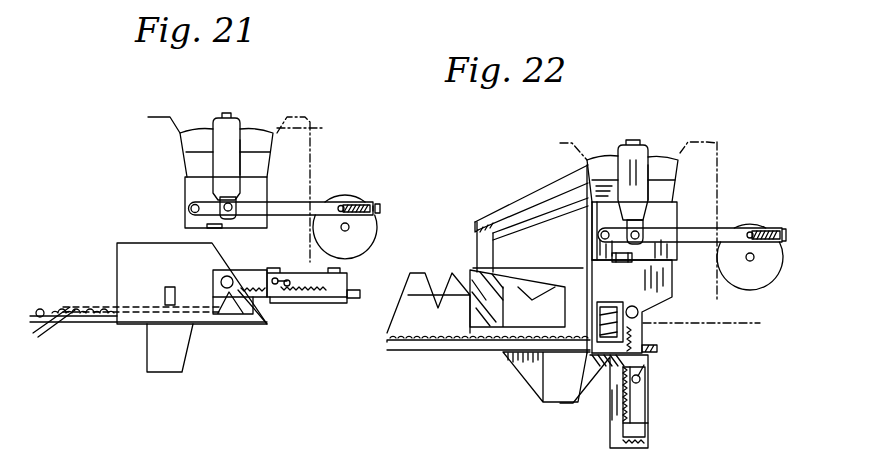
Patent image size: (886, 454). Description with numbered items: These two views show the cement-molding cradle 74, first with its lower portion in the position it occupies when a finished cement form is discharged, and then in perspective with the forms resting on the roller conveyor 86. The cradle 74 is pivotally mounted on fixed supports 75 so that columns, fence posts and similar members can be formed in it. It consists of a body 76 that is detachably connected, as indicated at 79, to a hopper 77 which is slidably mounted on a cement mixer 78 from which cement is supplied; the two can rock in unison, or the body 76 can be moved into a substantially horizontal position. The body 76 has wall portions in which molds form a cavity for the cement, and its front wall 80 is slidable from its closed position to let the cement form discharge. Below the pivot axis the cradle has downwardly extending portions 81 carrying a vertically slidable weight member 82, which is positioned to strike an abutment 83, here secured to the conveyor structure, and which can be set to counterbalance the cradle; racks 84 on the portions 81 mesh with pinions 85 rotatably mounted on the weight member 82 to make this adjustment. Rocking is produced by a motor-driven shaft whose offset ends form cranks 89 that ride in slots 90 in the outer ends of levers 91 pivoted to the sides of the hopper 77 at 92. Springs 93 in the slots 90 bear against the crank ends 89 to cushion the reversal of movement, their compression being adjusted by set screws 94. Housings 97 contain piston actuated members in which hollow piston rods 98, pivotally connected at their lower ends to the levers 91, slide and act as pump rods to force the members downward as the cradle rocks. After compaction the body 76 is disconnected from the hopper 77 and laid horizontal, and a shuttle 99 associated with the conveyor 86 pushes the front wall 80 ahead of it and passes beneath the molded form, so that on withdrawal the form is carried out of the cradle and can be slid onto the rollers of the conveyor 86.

In FIG. 21, the cradle 74 is at (248, 127).
In FIG. 22, the cradle 74 is at (658, 160).
In FIG. 21, the fixed supports 75 is at (229, 297).
In FIG. 22, the fixed supports 75 is at (620, 307).
In FIG. 21, the body 76 is at (128, 256).
In FIG. 22, the body 76 is at (672, 300).
In FIG. 21, the hopper 77 is at (190, 160).
In FIG. 22, the hopper 77 is at (603, 163).
In FIG. 21, the cement mixer 78 is at (249, 189).
In FIG. 22, the cement mixer 78 is at (717, 143).
In FIG. 22, the detachable connection 79 is at (632, 258).
In FIG. 21, the front wall 80 is at (263, 323).
In FIG. 22, the front wall 80 is at (538, 238).
In FIG. 21, the downwardly extending portions 81 is at (323, 282).
In FIG. 22, the downwardly extending portions 81 is at (640, 398).
In FIG. 21, the weight member 82 is at (317, 300).
In FIG. 22, the weight member 82 is at (601, 418).
In FIG. 21, the abutment 83 is at (180, 360).
In FIG. 22, the abutment 83 is at (557, 395).
In FIG. 21, the racks 84 is at (307, 290).
In FIG. 22, the racks 84 is at (640, 412).
In FIG. 21, the pinions 85 is at (268, 280).
In FIG. 22, the pinions 85 is at (652, 345).
In FIG. 21, the roller conveyor 86 is at (107, 314).
In FIG. 22, the roller conveyor 86 is at (537, 339).
In FIG. 21, the cranks 89 is at (342, 205).
In FIG. 22, the cranks 89 is at (748, 234).
In FIG. 21, the slots 90 is at (352, 204).
In FIG. 22, the slots 90 is at (757, 233).
In FIG. 21, the levers 91 is at (203, 202).
In FIG. 22, the levers 91 is at (662, 237).
In FIG. 21, the pivot 92 is at (191, 210).
In FIG. 21, the springs 93 is at (364, 205).
In FIG. 22, the springs 93 is at (768, 231).
In FIG. 21, the set screws 94 is at (382, 209).
In FIG. 21, the housings 97 is at (220, 137).
In FIG. 22, the housings 97 is at (628, 160).
In FIG. 21, the piston rods 98 is at (232, 200).
In FIG. 22, the piston rods 98 is at (612, 231).
In FIG. 21, the shuttle 99 is at (80, 311).
In FIG. 22, the shuttle 99 is at (507, 332).